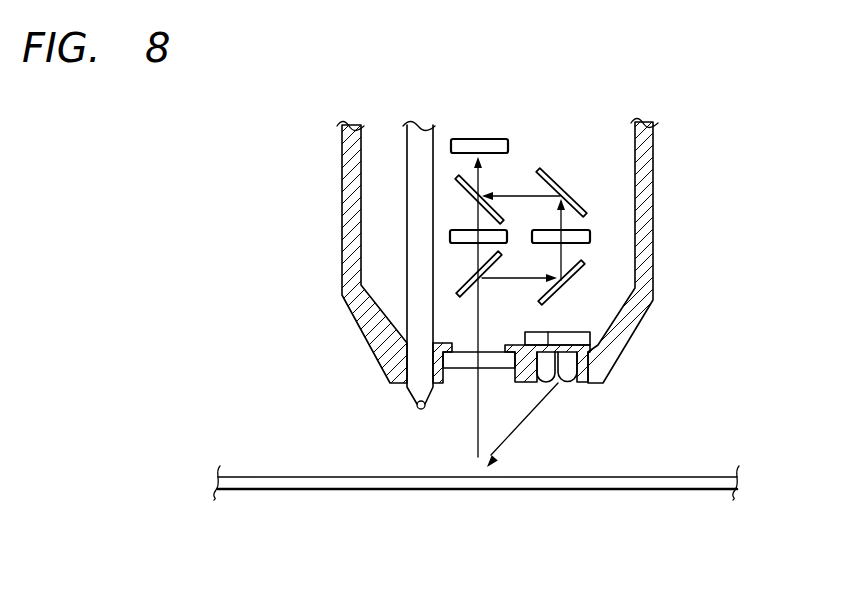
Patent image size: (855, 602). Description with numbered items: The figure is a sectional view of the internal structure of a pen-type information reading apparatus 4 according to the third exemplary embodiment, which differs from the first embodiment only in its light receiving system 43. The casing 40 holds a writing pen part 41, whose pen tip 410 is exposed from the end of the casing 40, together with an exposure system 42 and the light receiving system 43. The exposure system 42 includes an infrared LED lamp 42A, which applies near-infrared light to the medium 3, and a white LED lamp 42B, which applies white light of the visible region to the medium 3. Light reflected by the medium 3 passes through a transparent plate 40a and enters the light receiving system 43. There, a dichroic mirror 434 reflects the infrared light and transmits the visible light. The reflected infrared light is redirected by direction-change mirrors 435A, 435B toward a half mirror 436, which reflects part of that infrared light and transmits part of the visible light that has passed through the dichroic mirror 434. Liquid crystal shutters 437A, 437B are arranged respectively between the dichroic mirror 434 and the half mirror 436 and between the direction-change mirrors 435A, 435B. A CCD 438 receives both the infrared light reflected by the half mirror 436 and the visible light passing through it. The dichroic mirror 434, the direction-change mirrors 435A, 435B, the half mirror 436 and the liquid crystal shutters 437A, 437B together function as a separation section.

The medium 3 is at (330, 477).
The information reading apparatus 4 is at (350, 93).
The casing 40 is at (352, 233).
The transparent plate 40a is at (486, 466).
The writing pen part 41 is at (393, 296).
The pen tip 410 is at (416, 406).
The exposure system 42 is at (690, 395).
The infrared LED lamp 42A is at (572, 386).
The white LED lamp 42B is at (554, 384).
The light receiving system 43 is at (768, 32).
The dichroic mirror 434 is at (488, 265).
The direction-change mirror 435A is at (565, 285).
The direction-change mirror 435B is at (577, 200).
The half mirror 436 is at (480, 192).
The liquid crystal shutter 437A is at (507, 230).
The liquid crystal shutter 437B is at (590, 233).
The CCD 438 is at (490, 139).